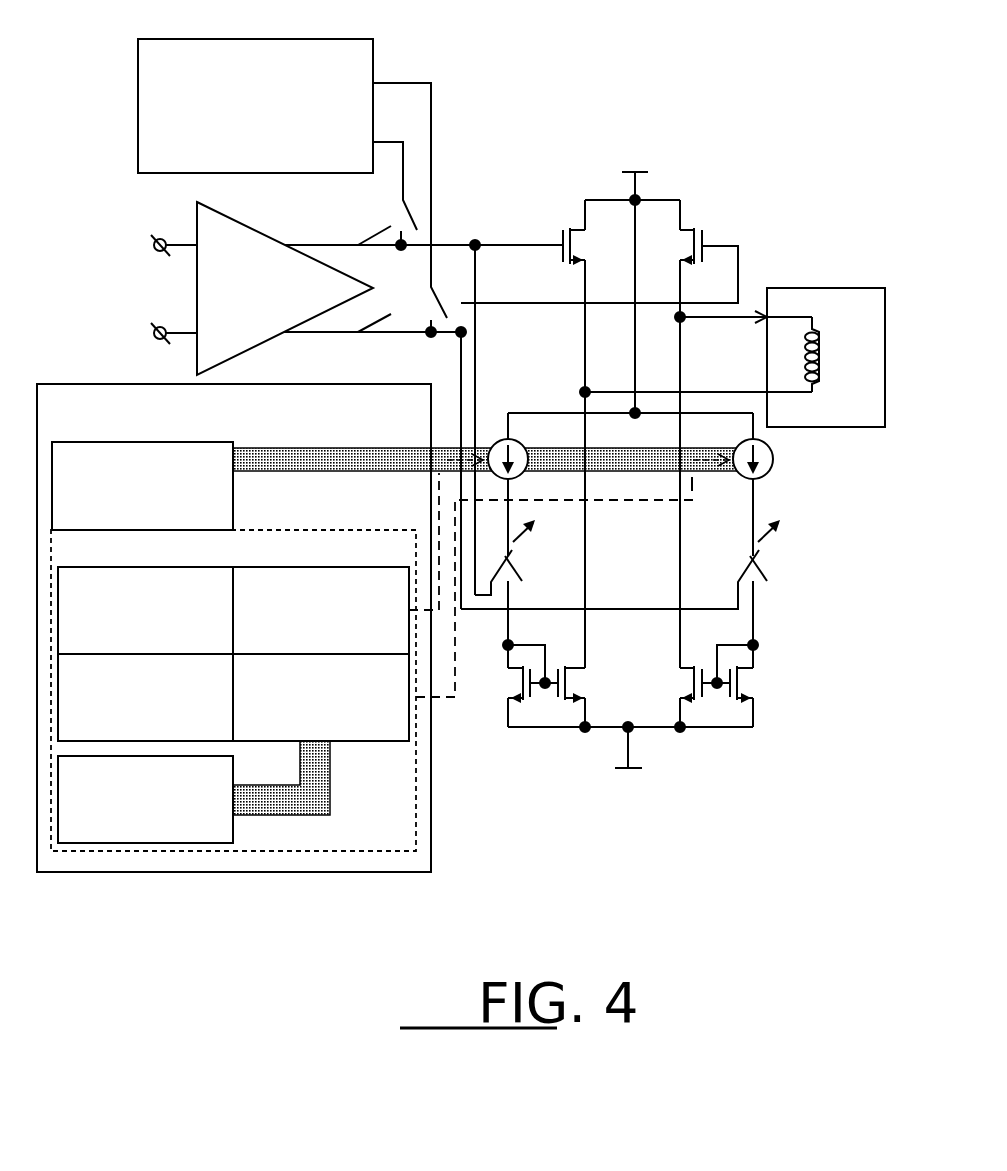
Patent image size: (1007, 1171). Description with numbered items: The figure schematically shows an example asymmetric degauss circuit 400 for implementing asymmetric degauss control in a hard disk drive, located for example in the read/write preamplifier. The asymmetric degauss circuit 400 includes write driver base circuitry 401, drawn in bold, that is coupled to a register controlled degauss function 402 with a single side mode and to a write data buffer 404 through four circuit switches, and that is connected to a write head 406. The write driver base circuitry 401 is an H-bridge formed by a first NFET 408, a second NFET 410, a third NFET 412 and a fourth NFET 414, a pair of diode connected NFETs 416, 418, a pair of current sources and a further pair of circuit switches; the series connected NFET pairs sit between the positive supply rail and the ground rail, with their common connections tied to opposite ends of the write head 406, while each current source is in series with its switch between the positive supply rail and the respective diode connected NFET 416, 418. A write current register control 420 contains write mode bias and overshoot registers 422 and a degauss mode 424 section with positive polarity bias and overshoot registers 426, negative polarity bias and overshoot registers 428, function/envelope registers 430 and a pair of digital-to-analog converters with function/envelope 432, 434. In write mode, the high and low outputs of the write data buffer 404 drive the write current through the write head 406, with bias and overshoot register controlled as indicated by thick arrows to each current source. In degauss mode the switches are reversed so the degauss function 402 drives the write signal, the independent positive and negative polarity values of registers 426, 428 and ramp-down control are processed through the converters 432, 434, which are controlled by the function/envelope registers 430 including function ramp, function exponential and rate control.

The asymmetric degauss circuit 400 is at (557, 35).
The write driver base circuitry 401 is at (716, 194).
The register controlled degauss function 402 is at (292, 185).
The write data buffer 404 is at (233, 288).
The write head 406 is at (874, 283).
The N-channel field effect transistor Q1 408 is at (587, 237).
The N-channel field effect transistor Q2 410 is at (677, 237).
The N-channel field effect transistor Q3 412 is at (586, 676).
The N-channel field effect transistor Q4 414 is at (674, 676).
The diode connected NFET 416 is at (505, 684).
The diode connected NFET 418 is at (755, 684).
The write current register control 420 is at (313, 433).
The write mode IBIAS and OS registers 422 is at (217, 518).
The degauss mode 424 is at (266, 560).
The P:IBIAS and OS registers 426 is at (145, 610).
The N:IBIAS and OS registers 428 is at (145, 697).
The function/envelope registers 430 is at (145, 799).
The digital-to-analog converter with function/envelope 432 is at (321, 610).
The digital-to-analog converter with function/envelope 434 is at (321, 697).